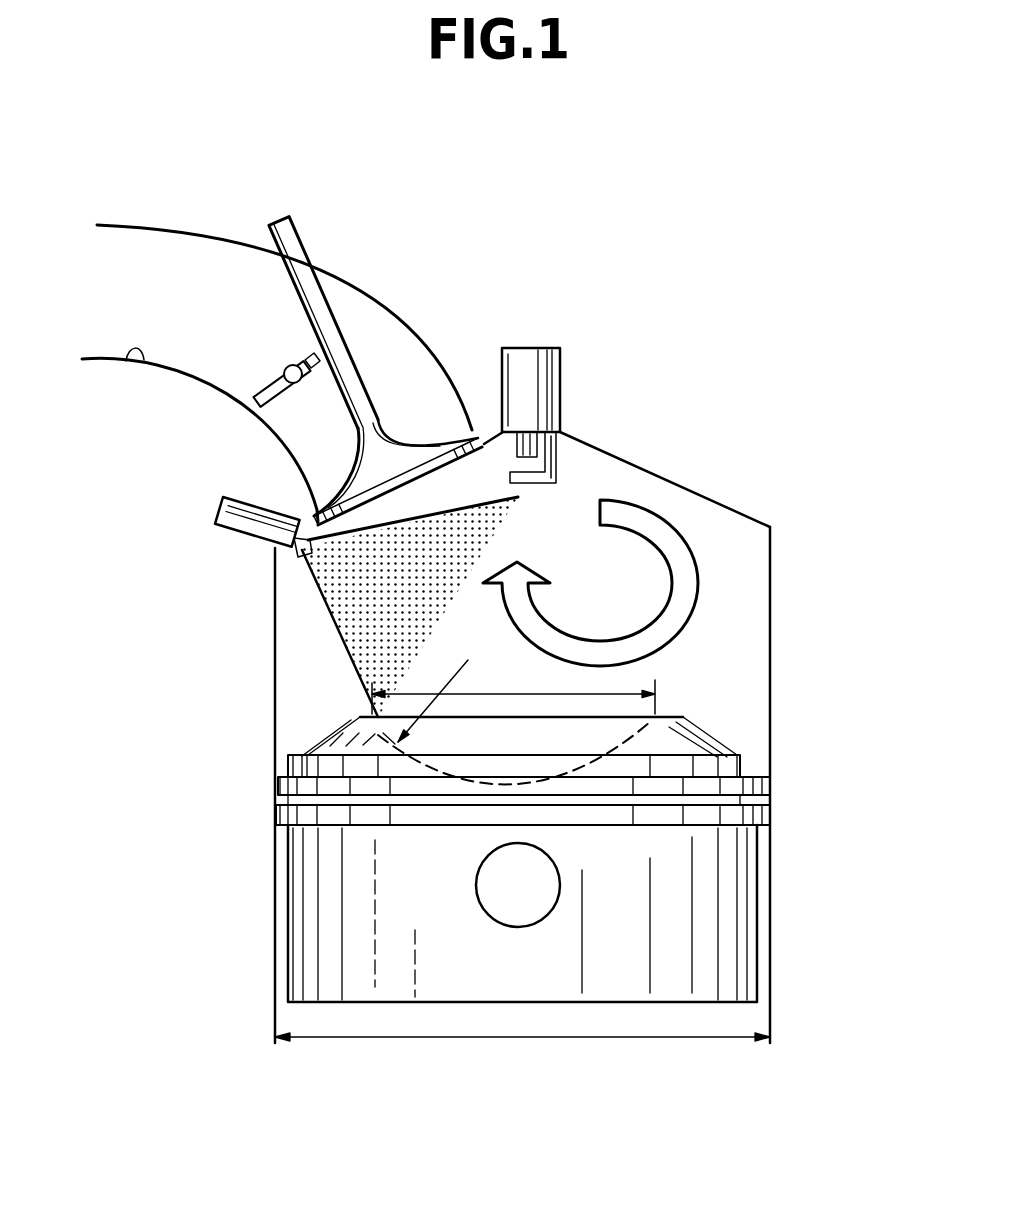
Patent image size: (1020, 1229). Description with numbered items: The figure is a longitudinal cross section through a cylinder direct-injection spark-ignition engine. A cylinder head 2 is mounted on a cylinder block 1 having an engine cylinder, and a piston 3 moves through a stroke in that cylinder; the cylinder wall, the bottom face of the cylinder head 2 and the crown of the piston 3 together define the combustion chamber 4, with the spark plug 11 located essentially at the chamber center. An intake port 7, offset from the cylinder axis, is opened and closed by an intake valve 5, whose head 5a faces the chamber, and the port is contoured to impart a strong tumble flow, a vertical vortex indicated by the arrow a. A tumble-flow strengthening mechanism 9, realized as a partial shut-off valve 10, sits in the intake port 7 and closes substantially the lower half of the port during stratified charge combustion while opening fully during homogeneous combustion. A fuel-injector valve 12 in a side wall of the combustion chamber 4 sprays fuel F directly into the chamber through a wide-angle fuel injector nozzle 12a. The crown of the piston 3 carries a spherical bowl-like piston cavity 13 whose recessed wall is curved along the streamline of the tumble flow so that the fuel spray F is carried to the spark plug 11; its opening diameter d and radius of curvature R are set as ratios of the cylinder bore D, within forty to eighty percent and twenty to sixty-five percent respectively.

The cylinder block 1 is at (772, 720).
The cylinder head 2 is at (660, 470).
The piston 3 is at (750, 923).
The combustion chamber 4 is at (746, 641).
The intake valve 5 is at (330, 316).
The valve head 5a is at (412, 440).
The intake port 7 is at (118, 368).
The tumble-flow strengthening mechanism 9 is at (280, 377).
The partial shut-off valve 10 is at (245, 417).
The spark plug 11 is at (562, 386).
The fuel-injector valve 12 is at (232, 535).
The fuel injector nozzle 12a is at (298, 553).
The spherical bowl-like piston cavity 13 is at (455, 778).
The fuel spray F is at (327, 622).
The tumble flow arrow a is at (655, 653).
The inside diameter of the cavity opening d is at (513, 689).
The radius of curvature R is at (447, 691).
The cylinder bore D is at (522, 1023).